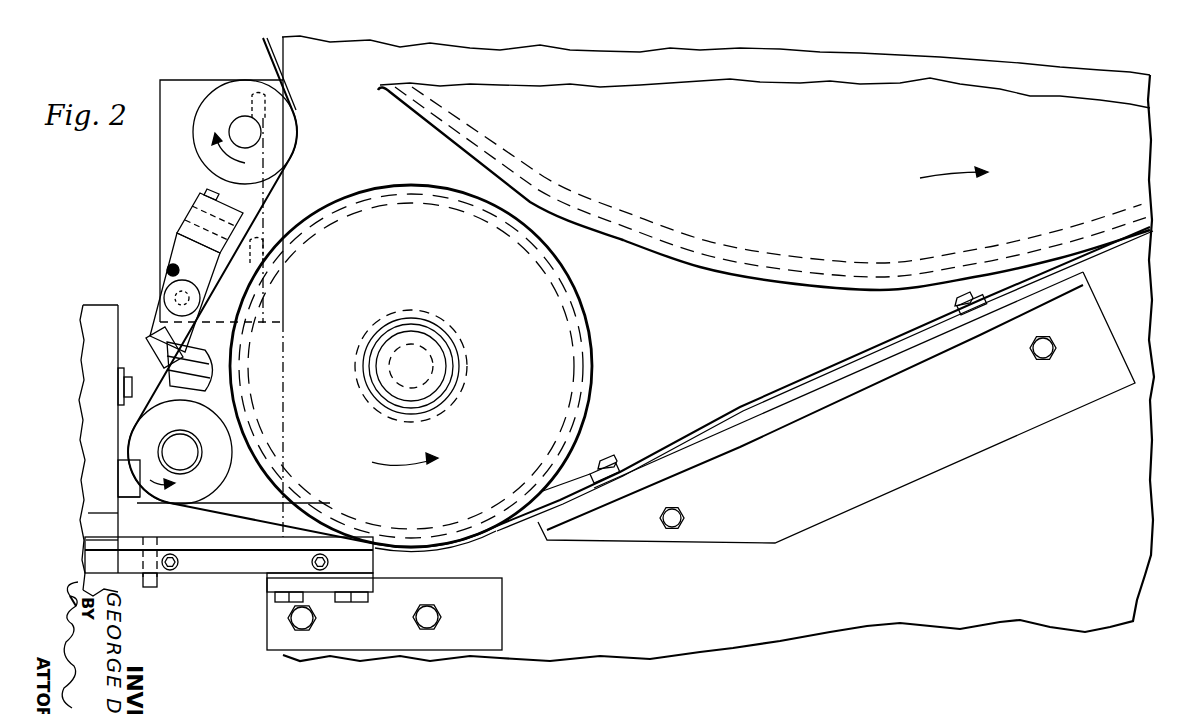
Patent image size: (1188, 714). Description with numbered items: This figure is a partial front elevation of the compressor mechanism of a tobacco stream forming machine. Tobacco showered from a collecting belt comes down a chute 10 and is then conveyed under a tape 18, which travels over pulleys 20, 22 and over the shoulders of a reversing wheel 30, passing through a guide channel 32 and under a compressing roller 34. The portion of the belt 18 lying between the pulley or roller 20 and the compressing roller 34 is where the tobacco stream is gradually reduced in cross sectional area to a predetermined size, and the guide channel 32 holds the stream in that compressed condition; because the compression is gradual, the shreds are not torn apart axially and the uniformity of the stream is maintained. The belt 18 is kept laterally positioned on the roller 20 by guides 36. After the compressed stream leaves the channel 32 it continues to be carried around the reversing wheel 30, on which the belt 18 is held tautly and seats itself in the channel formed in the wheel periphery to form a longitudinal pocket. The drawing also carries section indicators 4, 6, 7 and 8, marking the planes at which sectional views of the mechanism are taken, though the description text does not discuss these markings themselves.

The chute 10 is at (95, 386).
The tape 18 is at (277, 193).
The pulley 20 is at (150, 436).
The pulley 22 is at (212, 152).
The reversing wheel 30 is at (733, 248).
The guide channel 32 is at (704, 428).
The compressing roller 34 is at (545, 316).
The guides 36 is at (205, 367).
The section line 4- 4 is at (205, 87).
The section line 6- 6 is at (252, 465).
The section line 7- 7 is at (413, 340).
The section line 8- 8 is at (788, 372).